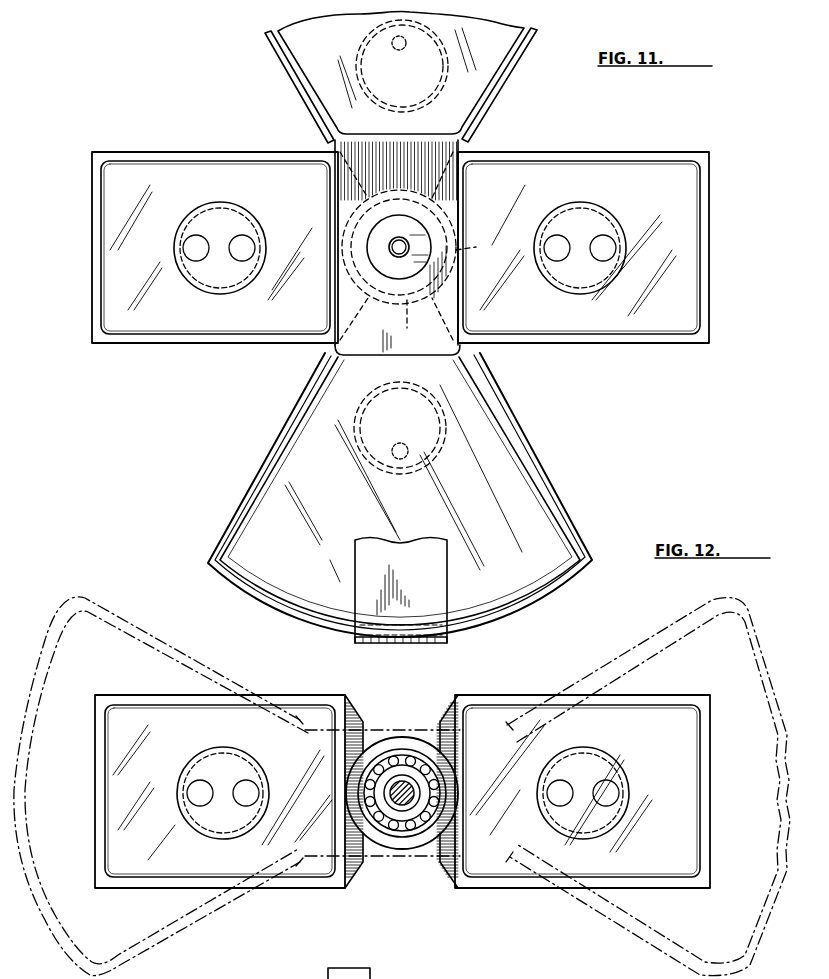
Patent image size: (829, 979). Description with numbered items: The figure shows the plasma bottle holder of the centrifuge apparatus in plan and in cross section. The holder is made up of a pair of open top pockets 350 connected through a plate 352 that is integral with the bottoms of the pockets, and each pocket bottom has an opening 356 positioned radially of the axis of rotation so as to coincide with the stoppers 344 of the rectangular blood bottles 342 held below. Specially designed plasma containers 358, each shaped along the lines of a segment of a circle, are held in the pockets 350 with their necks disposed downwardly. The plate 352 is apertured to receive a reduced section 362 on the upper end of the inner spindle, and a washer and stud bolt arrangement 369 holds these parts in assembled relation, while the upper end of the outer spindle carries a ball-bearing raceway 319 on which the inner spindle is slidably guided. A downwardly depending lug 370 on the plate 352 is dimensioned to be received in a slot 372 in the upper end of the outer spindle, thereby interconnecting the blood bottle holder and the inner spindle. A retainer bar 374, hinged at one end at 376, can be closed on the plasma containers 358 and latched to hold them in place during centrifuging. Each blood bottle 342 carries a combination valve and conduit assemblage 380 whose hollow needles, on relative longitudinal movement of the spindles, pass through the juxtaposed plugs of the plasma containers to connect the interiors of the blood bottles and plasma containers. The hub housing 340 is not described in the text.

In FIG. 12, the ball-bearing raceway 319 is at (426, 781).
In FIG. 12, the hub housing 340 is at (448, 712).
In FIG. 11, the blood bottle 342 is at (206, 184).
In FIG. 12, the blood bottle 342 is at (200, 736).
In FIG. 11, the stopper 344 is at (240, 218).
In FIG. 12, the stopper 344 is at (403, 793).
In FIG. 11, the open top pocket 350 is at (500, 92).
In FIG. 12, the open top pocket 350 is at (650, 628).
In FIG. 11, the plate 352 is at (408, 174).
In FIG. 11, the opening 356 is at (358, 58).
In FIG. 11, the plasma container 358 is at (488, 53).
In FIG. 12, the reduced section 362 is at (396, 793).
In FIG. 11, the washer and stud bolt arrangement 369 is at (399, 237).
In FIG. 11, the lug 370 is at (396, 322).
In FIG. 11, the slot 372 is at (477, 253).
In FIG. 12, the slot 372 is at (460, 797).
In FIG. 11, the retainer bar 374 is at (428, 581).
In FIG. 11, the hinge 376 is at (430, 645).
In FIG. 11, the combination valve and conduit assemblage 380 is at (240, 254).
In FIG. 12, the combination valve and conduit assemblage 380 is at (246, 790).